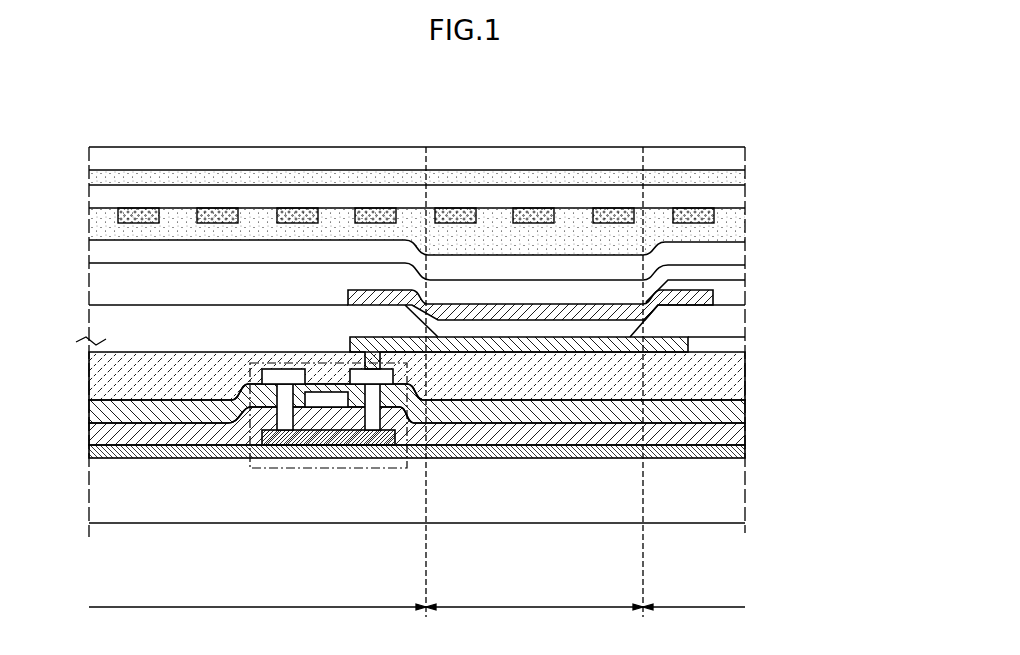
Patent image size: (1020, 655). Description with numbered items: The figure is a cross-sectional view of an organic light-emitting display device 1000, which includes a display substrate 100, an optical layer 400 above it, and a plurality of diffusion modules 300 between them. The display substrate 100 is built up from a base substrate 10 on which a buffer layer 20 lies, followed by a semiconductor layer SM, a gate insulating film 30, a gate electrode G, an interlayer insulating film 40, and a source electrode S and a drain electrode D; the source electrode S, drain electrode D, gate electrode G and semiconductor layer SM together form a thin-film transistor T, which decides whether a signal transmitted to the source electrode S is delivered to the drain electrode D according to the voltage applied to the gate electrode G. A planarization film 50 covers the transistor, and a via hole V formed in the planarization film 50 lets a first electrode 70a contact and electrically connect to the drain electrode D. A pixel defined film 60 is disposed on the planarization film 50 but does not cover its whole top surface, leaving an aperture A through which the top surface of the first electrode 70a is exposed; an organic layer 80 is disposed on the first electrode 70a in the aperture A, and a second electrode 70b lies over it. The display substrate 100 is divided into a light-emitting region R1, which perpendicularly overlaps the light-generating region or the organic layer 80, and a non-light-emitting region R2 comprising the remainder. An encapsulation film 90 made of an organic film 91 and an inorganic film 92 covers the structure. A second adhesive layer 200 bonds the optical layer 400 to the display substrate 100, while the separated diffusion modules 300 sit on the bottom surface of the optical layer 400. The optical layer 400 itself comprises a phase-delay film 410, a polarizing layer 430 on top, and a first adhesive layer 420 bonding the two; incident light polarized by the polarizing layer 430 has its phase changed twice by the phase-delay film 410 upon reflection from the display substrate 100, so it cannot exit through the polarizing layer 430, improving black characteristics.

The organic light-emitting display device 1000 is at (614, 99).
The display substrate 100 is at (489, 331).
The base substrate 10 is at (745, 492).
The buffer layer 20 is at (745, 455).
The gate insulating film 30 is at (745, 433).
The interlayer insulating film 40 is at (745, 411).
The planarization film 50 is at (745, 390).
The pixel defined film 60 is at (688, 345).
The first electrode 70a is at (718, 353).
The second electrode 70b is at (713, 297).
The organic layer 80 is at (643, 327).
The encapsulation film 90 is at (461, 275).
The organic film 91 is at (745, 281).
The inorganic film 92 is at (745, 266).
The second adhesive layer 200 is at (745, 248).
The diffusion modules 300 is at (118, 215).
The optical layer 400 is at (478, 176).
The phase-delay film 410 is at (745, 198).
The first adhesive layer 420 is at (745, 178).
The polarizing layer 430 is at (745, 156).
The aperture A is at (426, 330).
The source electrode S is at (268, 373).
The semiconductor layer SM is at (304, 437).
The gate electrode G is at (325, 399).
The thin-film transistor T is at (341, 450).
The drain electrode D is at (357, 376).
The via hole V is at (381, 366).
The light-emitting region R1 is at (534, 394).
The non-light-emitting region R2 is at (417, 623).